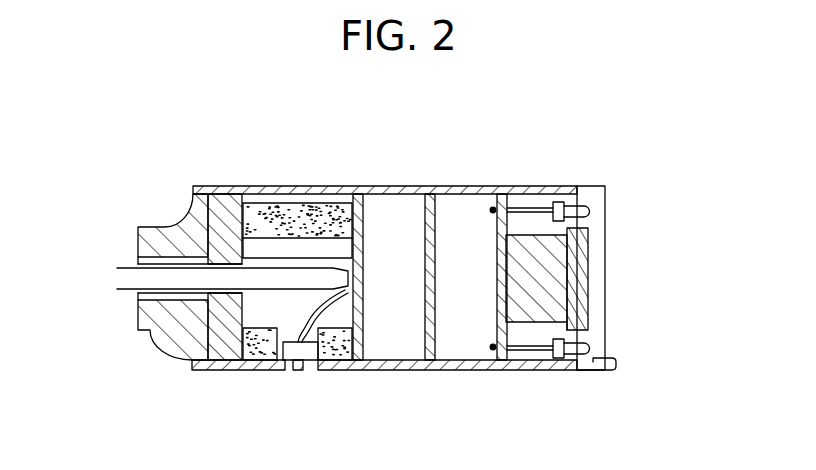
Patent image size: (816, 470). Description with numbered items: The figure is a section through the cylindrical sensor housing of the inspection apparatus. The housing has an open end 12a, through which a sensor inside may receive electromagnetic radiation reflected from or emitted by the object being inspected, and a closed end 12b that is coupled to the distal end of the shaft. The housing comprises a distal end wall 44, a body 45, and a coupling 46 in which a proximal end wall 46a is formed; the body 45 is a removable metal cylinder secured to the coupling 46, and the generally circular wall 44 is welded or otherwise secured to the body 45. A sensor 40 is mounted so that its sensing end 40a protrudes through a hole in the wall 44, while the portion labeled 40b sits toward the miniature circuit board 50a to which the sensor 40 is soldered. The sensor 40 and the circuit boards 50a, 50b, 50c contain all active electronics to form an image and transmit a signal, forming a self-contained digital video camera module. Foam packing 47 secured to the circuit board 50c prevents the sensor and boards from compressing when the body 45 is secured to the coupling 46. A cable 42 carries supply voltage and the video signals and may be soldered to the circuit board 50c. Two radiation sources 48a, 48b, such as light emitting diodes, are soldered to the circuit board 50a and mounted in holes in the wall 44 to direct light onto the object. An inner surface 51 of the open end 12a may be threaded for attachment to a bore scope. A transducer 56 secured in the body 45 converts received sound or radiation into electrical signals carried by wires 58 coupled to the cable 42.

The open end 12a is at (648, 308).
The closed end 12b is at (137, 347).
The sensor 40 is at (555, 272).
The sensing end 40a is at (586, 243).
The substrate side fixing points 40b is at (495, 304).
The cable 42 is at (117, 272).
The distal end wall 44 is at (580, 332).
The body 45 is at (395, 371).
The coupling 46 is at (198, 204).
The proximal end wall 46a is at (228, 200).
The foam packing 47 is at (307, 210).
The radiation source 48a is at (590, 210).
The radiation source 48b is at (590, 350).
The miniature circuit board 50a is at (501, 200).
The circuit board 50b is at (431, 200).
The circuit board 50c is at (358, 200).
The inner surface 51 is at (614, 360).
The transducer 56 is at (289, 355).
The wires 58 is at (334, 334).